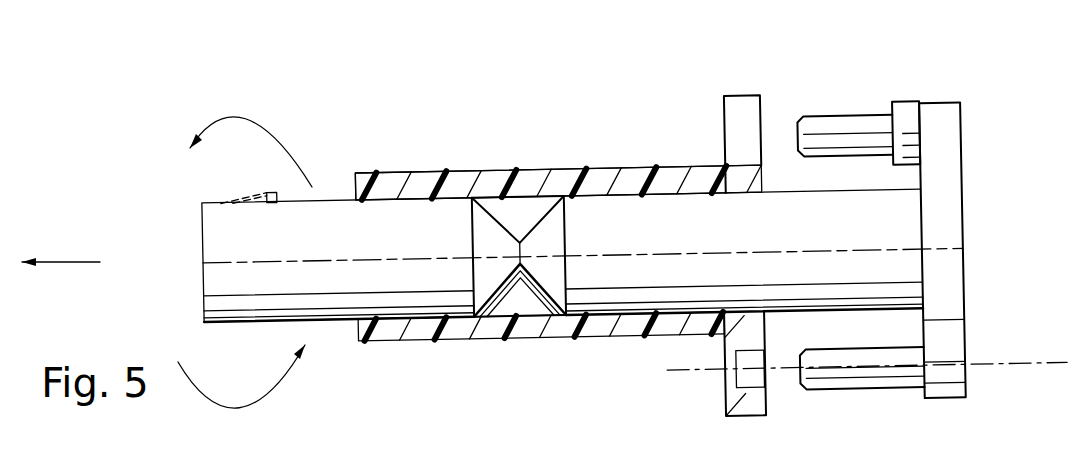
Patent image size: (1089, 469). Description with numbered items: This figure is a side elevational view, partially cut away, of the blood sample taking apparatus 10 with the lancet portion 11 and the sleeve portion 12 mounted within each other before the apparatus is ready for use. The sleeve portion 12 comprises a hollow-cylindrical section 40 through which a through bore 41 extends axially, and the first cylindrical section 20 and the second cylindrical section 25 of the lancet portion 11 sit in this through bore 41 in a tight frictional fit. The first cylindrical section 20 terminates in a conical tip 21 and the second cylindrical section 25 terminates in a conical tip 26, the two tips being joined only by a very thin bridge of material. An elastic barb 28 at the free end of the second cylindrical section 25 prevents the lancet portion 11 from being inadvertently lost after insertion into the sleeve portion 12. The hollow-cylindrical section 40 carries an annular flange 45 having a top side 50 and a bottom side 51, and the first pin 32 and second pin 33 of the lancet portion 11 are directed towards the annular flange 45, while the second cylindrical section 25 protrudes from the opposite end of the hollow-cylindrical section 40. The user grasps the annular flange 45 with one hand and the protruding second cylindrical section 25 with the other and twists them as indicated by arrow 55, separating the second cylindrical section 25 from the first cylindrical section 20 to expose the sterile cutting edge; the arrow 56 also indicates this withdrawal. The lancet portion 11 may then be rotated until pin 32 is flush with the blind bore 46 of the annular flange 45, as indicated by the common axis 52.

The blood sample taking apparatus 10 is at (606, 145).
The lancet portion 11 is at (938, 88).
The sleeve portion 12 is at (506, 143).
The first cylindrical section 20 is at (672, 225).
The conical tip 21 is at (556, 235).
The second cylindrical section 25 is at (222, 238).
The conical tip 26 is at (500, 228).
The elastic barb 28 is at (267, 193).
The first pin 32 is at (874, 370).
The second pin 33 is at (840, 107).
The hollow-cylindrical section 40 is at (610, 355).
The through bore 41 is at (522, 326).
The annular flange 45 is at (947, 160).
The blind bore 46 is at (762, 377).
The top side 50 is at (768, 125).
The bottom side 51 is at (737, 409).
The common axis 52 is at (1032, 366).
The arrow 55 is at (288, 140).
The withdrawal direction arrow 56 is at (70, 262).